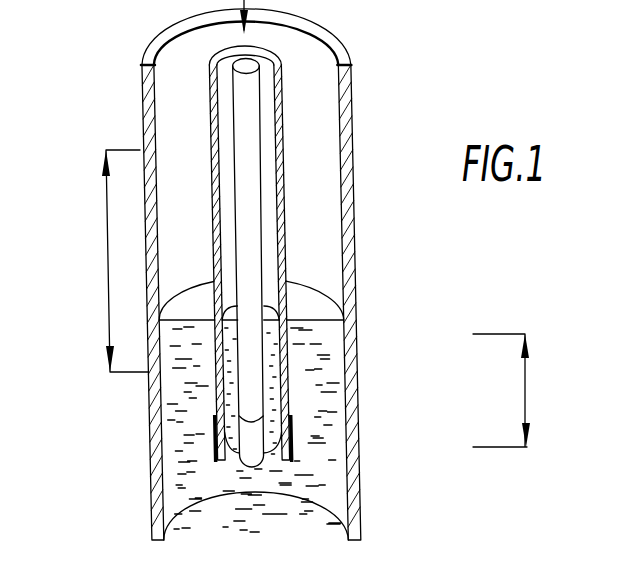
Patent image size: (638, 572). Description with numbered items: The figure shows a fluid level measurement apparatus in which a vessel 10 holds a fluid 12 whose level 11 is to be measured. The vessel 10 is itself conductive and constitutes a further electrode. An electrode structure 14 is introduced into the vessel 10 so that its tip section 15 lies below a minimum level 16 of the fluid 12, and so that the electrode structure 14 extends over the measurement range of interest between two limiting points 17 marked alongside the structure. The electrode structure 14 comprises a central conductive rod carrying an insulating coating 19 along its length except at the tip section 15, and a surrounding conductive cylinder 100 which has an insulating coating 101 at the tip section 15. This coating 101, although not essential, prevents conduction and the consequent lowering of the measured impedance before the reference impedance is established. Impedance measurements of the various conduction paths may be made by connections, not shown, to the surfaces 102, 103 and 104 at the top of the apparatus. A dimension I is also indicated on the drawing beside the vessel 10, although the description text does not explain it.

The vessel 10 is at (348, 257).
The level 11 is at (353, 318).
The fluid 12 is at (303, 483).
The electrode structure 14 is at (268, 90).
The tip section 15 is at (260, 440).
The minimum level 16 is at (150, 417).
The limiting points 17 is at (106, 268).
The insulating coating 19 is at (260, 143).
The surrounding conductive cylinder 100 is at (283, 202).
The insulating coating 101 is at (217, 442).
The surface 102 is at (262, 50).
The surface 103 is at (247, 66).
The surface 104 is at (172, 34).
The dimension I is at (506, 390).